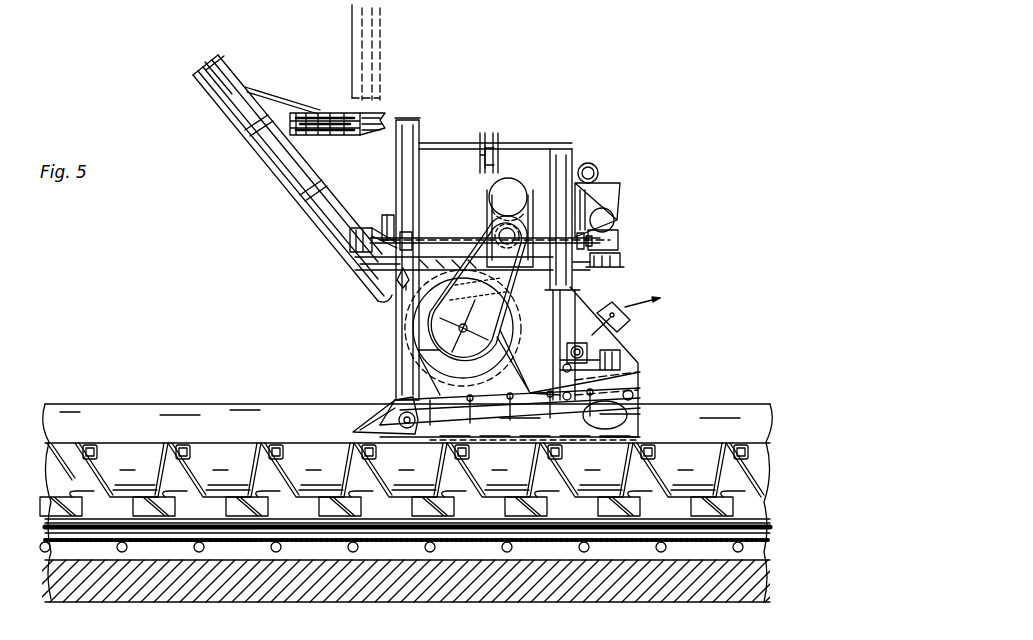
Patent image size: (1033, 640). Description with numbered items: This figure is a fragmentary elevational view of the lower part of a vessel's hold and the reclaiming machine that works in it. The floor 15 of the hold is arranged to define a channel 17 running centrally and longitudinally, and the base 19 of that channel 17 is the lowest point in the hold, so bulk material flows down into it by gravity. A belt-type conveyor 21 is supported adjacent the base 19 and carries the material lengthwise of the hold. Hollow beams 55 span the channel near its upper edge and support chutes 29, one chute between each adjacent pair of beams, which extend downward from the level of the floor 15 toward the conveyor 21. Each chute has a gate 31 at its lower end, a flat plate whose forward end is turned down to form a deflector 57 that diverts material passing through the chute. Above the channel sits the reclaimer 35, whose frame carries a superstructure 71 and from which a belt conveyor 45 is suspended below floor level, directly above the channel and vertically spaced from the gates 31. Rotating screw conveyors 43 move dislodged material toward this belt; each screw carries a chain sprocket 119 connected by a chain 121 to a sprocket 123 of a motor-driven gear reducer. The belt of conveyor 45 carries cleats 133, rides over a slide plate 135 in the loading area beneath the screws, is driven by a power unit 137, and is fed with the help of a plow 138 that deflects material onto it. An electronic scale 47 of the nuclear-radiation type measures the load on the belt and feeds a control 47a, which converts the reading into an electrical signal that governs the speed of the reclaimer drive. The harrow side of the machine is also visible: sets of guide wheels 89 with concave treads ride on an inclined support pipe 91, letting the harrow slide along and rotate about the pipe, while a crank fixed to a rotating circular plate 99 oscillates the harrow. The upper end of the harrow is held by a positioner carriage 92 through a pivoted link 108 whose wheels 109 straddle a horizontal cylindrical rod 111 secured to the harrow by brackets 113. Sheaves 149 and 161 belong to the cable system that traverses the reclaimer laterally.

The floor 15 is at (408, 503).
The channel 17 is at (75, 553).
The base 19 is at (470, 580).
The conveyor 21 is at (248, 543).
The chutes 29 is at (200, 455).
The gate 31 is at (128, 500).
The reclaimer 35 is at (640, 266).
The screw conveyors 43 is at (428, 295).
The belt conveyor 45 is at (410, 395).
The electronic scale 47 is at (585, 345).
The control 47a is at (612, 305).
The hollow beams 55 is at (183, 445).
The deflector 57 is at (262, 500).
The superstructure 71 is at (412, 132).
The sets of guide wheels 89 is at (356, 226).
The support pipe 91 is at (350, 15).
The positioner carriage 92 is at (378, 108).
The circular plate 99 is at (384, 220).
The link 108 is at (378, 118).
The wheels 109 is at (327, 132).
The cylindrical rod 111 is at (323, 114).
The brackets 113 is at (265, 97).
The chain sprocket 119 is at (463, 328).
The chain 121 is at (452, 243).
The sprocket 123 is at (500, 223).
The cleats 133 is at (498, 440).
The slide plate 135 is at (510, 412).
The power unit 137 is at (612, 357).
The plow 138 is at (360, 428).
The sheave 149 is at (484, 128).
The sheave 161 is at (497, 138).